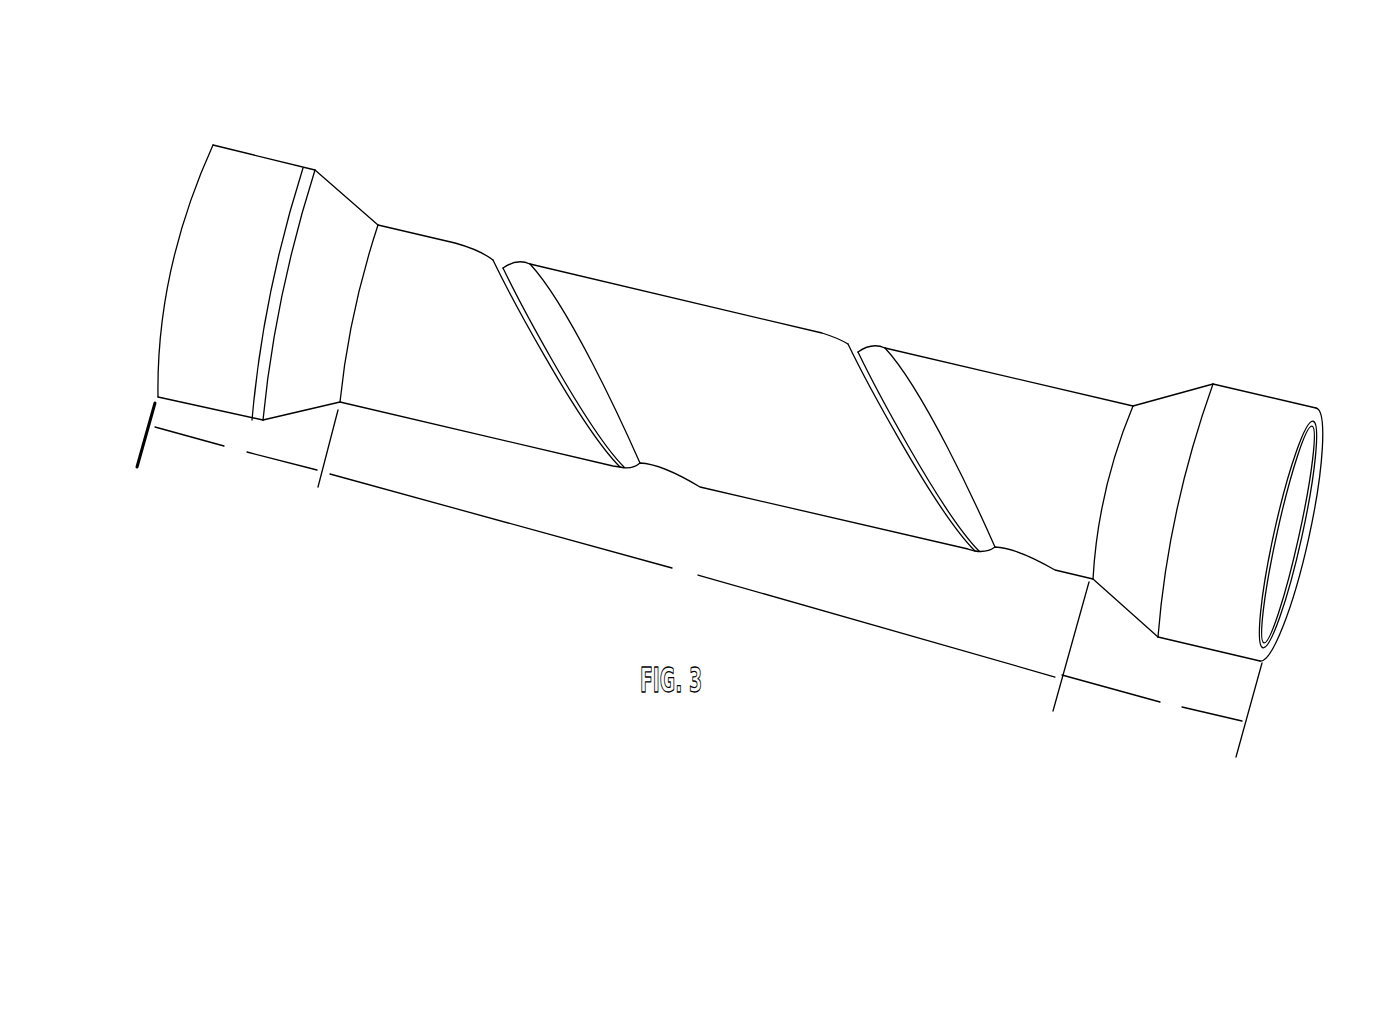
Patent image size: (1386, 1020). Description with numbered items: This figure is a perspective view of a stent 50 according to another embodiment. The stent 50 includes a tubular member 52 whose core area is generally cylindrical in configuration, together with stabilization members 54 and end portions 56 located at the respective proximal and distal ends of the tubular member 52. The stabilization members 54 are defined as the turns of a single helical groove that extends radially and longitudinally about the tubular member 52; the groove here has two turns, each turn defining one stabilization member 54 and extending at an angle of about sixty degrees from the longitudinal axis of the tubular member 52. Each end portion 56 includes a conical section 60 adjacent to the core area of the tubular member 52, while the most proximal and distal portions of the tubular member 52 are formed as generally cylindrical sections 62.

The stent 50 is at (779, 203).
The tubular member 52 is at (666, 285).
The stabilization member 54 is at (525, 277).
The end portion 56 is at (272, 150).
The conical section 60 is at (348, 195).
The cylindrical section 62 is at (245, 151).